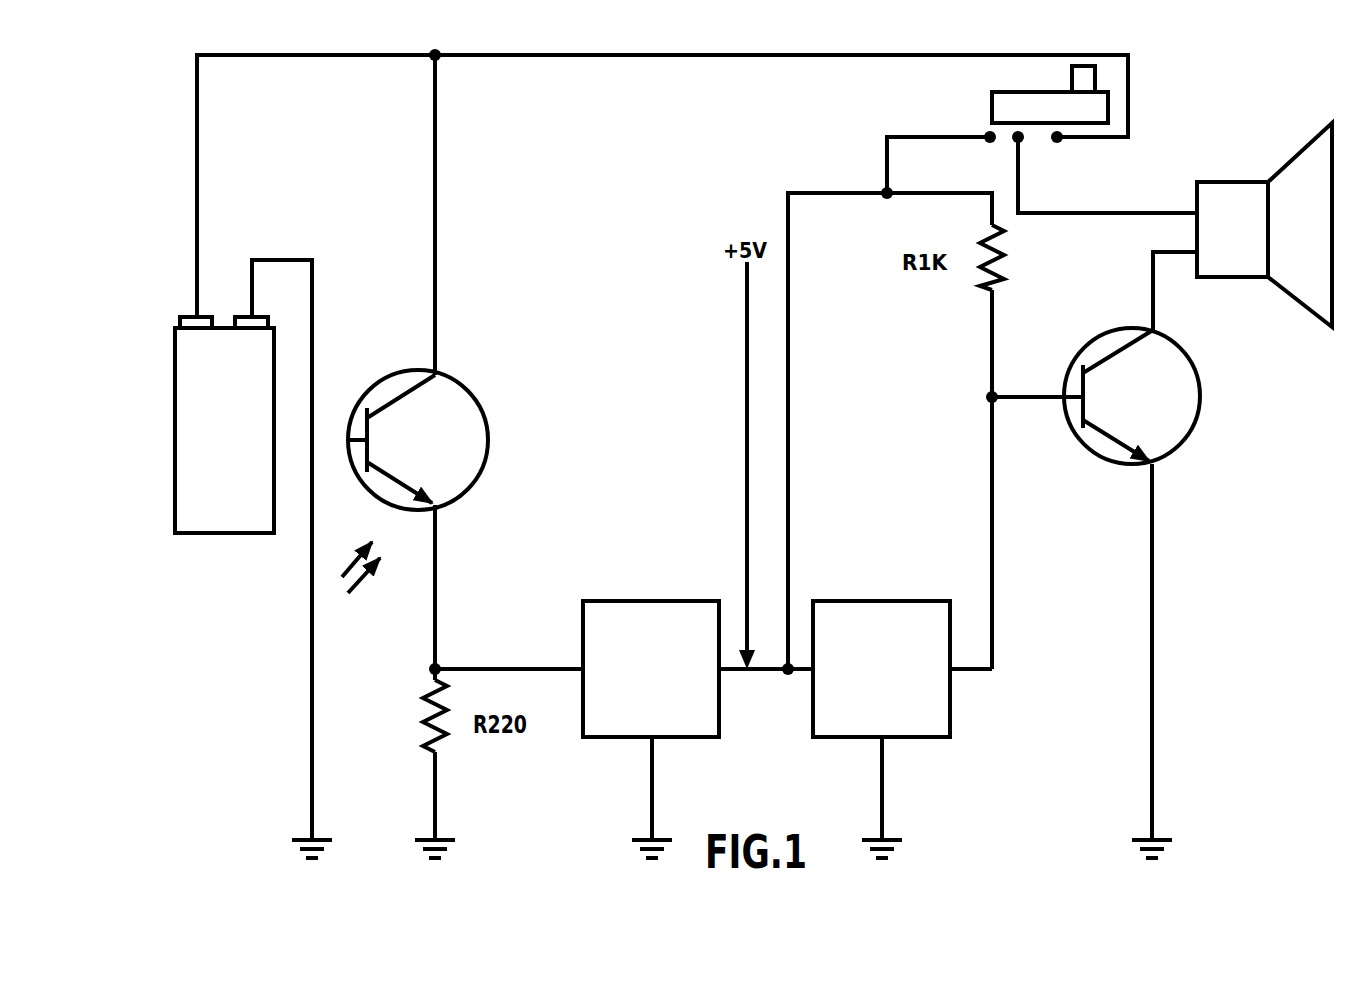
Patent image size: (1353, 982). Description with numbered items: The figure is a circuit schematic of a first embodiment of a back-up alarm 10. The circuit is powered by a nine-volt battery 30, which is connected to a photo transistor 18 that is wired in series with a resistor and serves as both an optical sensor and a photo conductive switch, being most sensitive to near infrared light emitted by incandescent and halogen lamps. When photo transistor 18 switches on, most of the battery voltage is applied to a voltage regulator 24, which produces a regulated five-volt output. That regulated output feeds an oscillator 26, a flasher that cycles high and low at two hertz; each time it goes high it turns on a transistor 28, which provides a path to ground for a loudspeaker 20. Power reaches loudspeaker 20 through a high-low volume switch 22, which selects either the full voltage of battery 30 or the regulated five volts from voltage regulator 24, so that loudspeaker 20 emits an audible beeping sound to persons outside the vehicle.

The back-up alarm 10 is at (185, 209).
The photo transistor 18 is at (467, 388).
The loudspeaker 20 is at (1217, 277).
The high-low volume switch 22 is at (992, 92).
The voltage regulator 24 is at (685, 737).
The oscillator 26 is at (918, 737).
The transistor 28 is at (1174, 457).
The 9-volt battery 30 is at (216, 533).